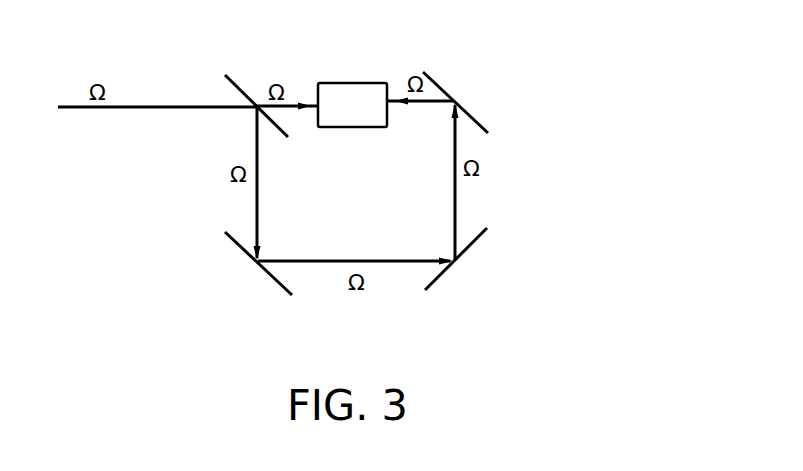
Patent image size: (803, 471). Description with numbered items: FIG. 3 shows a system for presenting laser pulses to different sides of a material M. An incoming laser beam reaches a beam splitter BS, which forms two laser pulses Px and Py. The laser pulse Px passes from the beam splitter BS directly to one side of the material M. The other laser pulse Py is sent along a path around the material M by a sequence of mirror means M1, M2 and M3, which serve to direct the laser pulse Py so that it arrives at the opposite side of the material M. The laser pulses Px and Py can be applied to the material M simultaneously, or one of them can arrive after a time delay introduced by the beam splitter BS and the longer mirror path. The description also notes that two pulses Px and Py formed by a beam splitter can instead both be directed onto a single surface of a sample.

The beam splitter BS is at (238, 66).
The mirror means M1 is at (240, 254).
The mirror means M2 is at (482, 250).
The mirror means M3 is at (477, 99).
The material M is at (359, 119).
The laser pulse Px is at (274, 62).
The laser pulse Py is at (417, 123).